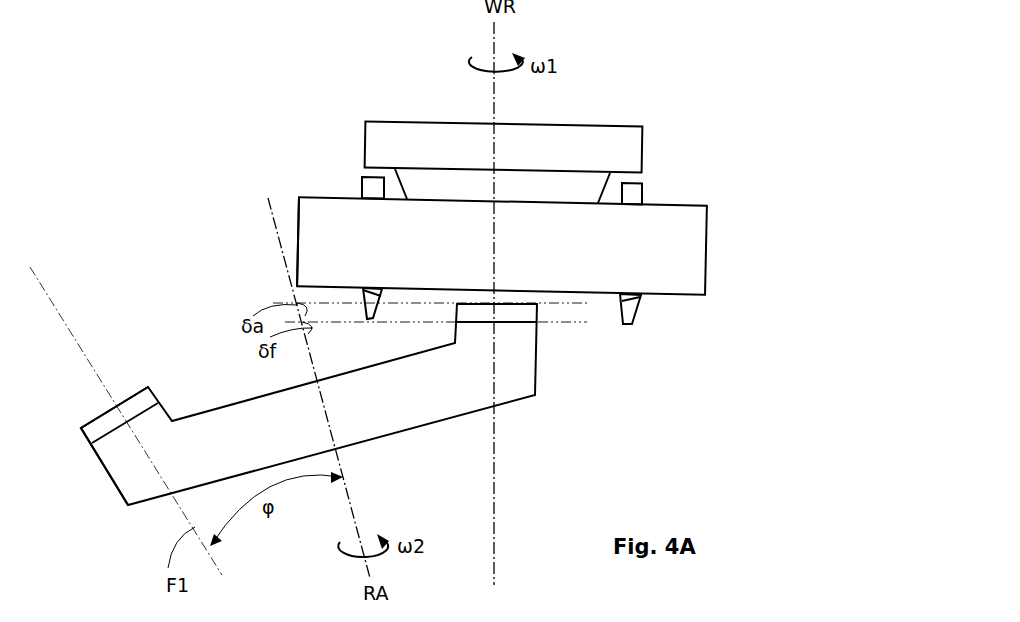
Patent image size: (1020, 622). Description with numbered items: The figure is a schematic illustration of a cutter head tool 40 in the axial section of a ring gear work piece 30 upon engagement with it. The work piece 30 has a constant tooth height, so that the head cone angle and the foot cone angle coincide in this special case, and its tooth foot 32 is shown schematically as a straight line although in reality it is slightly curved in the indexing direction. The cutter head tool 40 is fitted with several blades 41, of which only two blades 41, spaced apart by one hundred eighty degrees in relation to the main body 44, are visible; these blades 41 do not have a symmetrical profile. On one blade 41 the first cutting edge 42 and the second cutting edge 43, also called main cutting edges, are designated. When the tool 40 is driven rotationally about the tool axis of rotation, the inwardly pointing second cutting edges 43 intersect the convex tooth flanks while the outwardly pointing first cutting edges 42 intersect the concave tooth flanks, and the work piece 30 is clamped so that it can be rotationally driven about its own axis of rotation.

The work piece 30 is at (517, 378).
The tooth foot 32 is at (107, 440).
The cutter head tool 40 is at (704, 270).
The blades 41 is at (655, 314).
The first cutting edge 42 is at (635, 316).
The second cutting edge 43 is at (617, 312).
The main body 44 is at (305, 238).